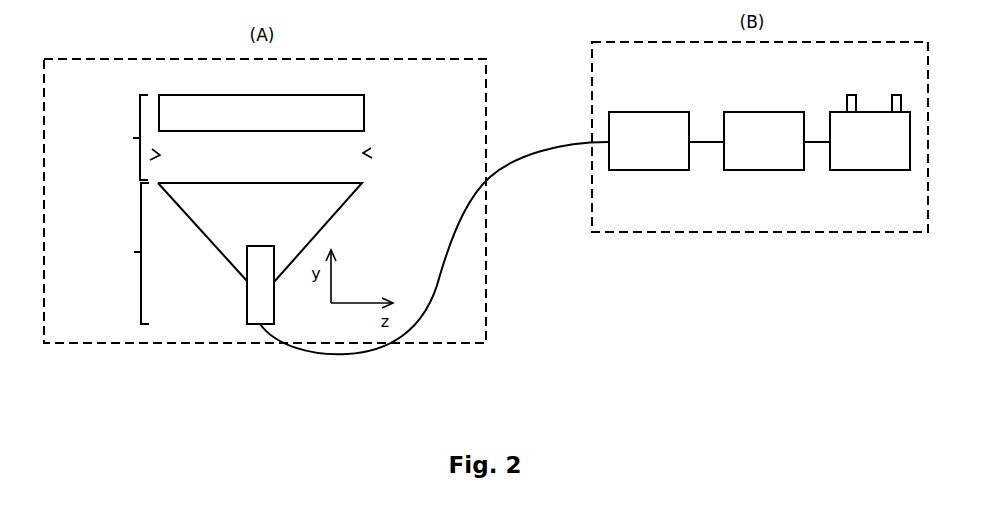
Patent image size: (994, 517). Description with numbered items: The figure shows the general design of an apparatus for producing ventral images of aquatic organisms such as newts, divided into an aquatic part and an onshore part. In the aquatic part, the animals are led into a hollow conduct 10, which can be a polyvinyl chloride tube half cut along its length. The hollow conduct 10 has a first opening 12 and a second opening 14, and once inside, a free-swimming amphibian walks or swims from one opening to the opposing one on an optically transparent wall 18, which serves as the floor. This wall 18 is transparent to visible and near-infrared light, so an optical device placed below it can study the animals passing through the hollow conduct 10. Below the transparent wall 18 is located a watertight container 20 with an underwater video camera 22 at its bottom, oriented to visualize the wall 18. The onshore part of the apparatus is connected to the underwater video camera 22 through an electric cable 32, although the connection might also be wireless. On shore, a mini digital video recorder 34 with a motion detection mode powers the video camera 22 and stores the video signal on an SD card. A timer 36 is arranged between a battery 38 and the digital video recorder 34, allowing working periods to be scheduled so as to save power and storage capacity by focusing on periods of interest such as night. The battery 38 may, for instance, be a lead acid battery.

The hollow conduct 10 is at (118, 137).
The first opening 12 is at (160, 155).
The second opening 14 is at (363, 153).
The optically transparent wall 18 is at (250, 183).
The watertight container 20 is at (119, 253).
The underwater video camera 22 is at (246, 306).
The electric cable 32 is at (500, 170).
The mini digital video recorder 34 is at (666, 141).
The timer 36 is at (777, 141).
The battery 38 is at (878, 170).